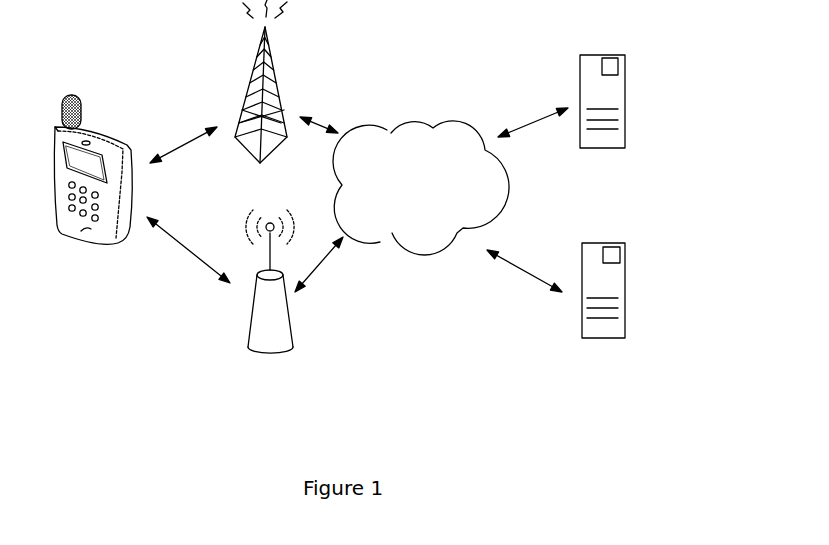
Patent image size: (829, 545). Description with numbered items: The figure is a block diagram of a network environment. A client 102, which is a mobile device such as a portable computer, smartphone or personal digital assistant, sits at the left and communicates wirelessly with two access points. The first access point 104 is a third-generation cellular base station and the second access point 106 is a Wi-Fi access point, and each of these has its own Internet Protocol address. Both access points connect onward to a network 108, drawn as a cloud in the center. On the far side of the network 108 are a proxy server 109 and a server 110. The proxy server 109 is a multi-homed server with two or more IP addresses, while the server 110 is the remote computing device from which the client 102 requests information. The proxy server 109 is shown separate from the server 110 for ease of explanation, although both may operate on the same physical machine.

The client 102 is at (63, 223).
The first access point 104 is at (240, 83).
The second access point 106 is at (252, 333).
The network 108 is at (391, 235).
The proxy server 109 is at (618, 122).
The server 110 is at (620, 288).